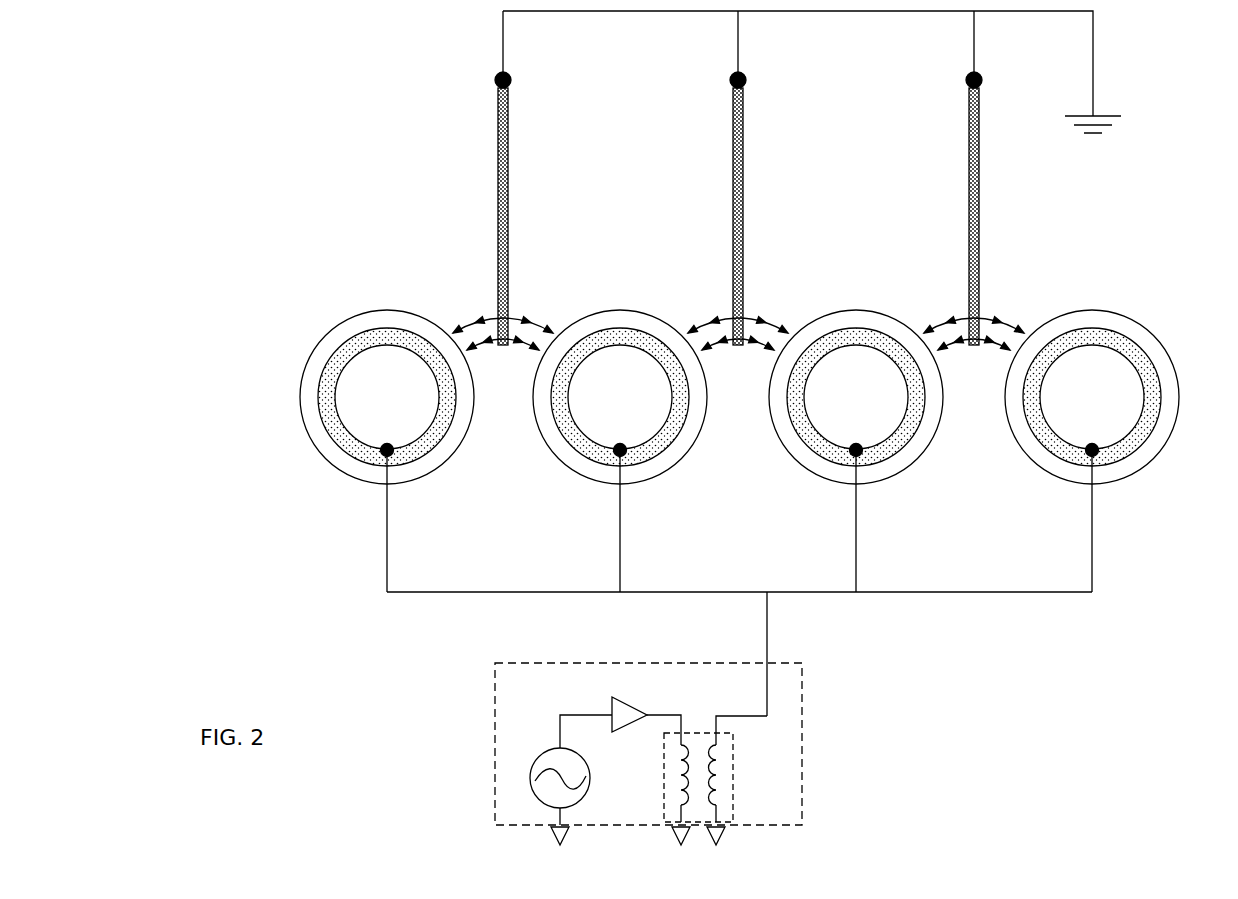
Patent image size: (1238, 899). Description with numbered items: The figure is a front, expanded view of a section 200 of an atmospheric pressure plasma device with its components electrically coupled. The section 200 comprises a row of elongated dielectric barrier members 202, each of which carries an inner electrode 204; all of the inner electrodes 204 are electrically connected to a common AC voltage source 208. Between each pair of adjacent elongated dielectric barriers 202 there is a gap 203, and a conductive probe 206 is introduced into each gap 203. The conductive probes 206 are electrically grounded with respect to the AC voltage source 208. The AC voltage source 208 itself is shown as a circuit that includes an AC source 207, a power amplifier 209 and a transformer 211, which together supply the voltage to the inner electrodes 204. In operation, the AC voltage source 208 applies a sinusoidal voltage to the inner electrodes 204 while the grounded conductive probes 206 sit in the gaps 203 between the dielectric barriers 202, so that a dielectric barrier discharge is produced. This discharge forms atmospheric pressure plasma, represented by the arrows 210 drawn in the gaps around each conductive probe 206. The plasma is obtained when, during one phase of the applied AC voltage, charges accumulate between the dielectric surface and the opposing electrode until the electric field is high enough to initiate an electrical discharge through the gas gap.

The atmospheric pressure plasma device section 200 is at (338, 91).
The elongated dielectric barrier member 202 is at (334, 325).
The gap 203 is at (506, 416).
The inner electrode 204 is at (340, 410).
The conductive probe 206 is at (735, 137).
The AC source 207 is at (534, 765).
The AC voltage source 208 is at (815, 680).
The power amplifier 209 is at (641, 694).
The atmospheric pressure plasma 210 is at (551, 290).
The transformer 211 is at (750, 776).